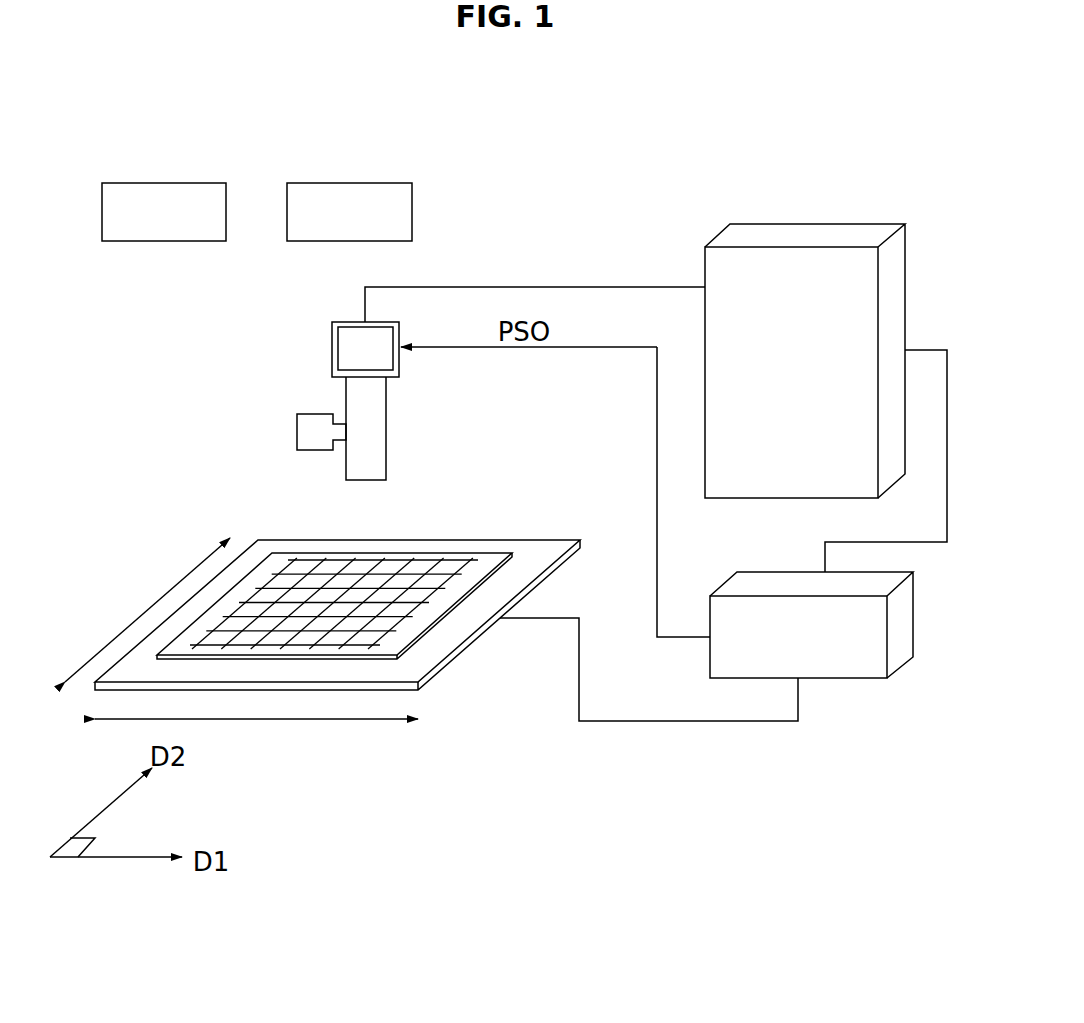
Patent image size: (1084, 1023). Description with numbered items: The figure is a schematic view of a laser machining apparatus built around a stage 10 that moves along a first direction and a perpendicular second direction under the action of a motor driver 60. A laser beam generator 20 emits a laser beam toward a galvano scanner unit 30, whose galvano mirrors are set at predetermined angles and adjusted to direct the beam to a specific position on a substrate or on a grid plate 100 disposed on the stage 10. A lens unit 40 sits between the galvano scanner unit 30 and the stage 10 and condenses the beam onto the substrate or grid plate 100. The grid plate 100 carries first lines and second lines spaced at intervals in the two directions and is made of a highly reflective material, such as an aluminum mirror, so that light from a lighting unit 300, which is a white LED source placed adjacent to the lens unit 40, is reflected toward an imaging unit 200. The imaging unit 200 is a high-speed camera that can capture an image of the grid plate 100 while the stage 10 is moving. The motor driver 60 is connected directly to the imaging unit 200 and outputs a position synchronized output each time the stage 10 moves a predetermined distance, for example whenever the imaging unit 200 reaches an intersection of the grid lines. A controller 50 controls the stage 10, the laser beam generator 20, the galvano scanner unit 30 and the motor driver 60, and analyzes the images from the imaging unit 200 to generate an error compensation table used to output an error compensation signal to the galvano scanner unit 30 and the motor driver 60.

The stage 10 is at (442, 667).
The grid plate 100 is at (222, 598).
The laser beam generator 20 is at (163, 183).
The galvano scanner unit 30 is at (350, 183).
The lens unit 40 is at (386, 428).
The controller 50 is at (787, 232).
The motor driver 60 is at (860, 680).
The imaging unit 200 is at (332, 345).
The lighting unit 300 is at (297, 432).